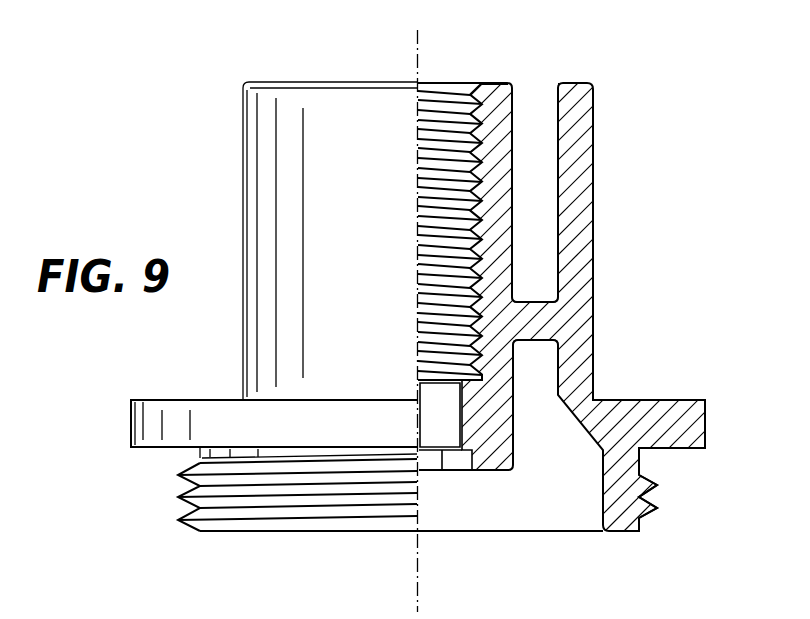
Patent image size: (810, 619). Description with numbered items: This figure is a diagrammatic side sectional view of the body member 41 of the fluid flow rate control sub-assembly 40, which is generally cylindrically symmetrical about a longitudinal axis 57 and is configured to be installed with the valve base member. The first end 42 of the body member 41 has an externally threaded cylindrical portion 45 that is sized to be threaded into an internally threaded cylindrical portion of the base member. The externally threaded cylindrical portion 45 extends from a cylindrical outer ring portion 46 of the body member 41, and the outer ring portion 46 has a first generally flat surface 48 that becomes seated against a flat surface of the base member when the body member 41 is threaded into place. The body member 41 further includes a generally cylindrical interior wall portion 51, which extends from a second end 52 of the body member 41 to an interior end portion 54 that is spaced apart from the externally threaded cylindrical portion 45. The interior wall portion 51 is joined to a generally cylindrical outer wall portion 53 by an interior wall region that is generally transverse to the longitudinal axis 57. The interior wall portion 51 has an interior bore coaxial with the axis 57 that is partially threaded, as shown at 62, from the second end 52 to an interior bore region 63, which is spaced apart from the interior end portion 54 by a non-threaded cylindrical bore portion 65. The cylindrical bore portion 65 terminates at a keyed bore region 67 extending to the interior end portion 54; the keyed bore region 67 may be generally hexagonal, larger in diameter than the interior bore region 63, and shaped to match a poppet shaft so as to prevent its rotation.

The fluid flow rate control sub-assembly 40 is at (646, 344).
The body member 41 is at (595, 258).
The first end 42 is at (621, 532).
The externally threaded cylindrical portion 45 is at (178, 497).
The cylindrical outer ring portion 46 is at (175, 410).
The first generally flat surface 48 is at (153, 449).
The generally cylindrical interior wall portion 51 is at (498, 116).
The second end 52 is at (492, 82).
The generally cylindrical outer wall portion 53 is at (577, 212).
The interior end portion 54 is at (488, 471).
The longitudinal axis 57 is at (420, 578).
The threaded portion of interior bore 62 is at (483, 268).
The interior bore region 63 is at (465, 392).
The non-threaded cylindrical bore portion 65 is at (460, 397).
The keyed bore region 67 is at (472, 459).